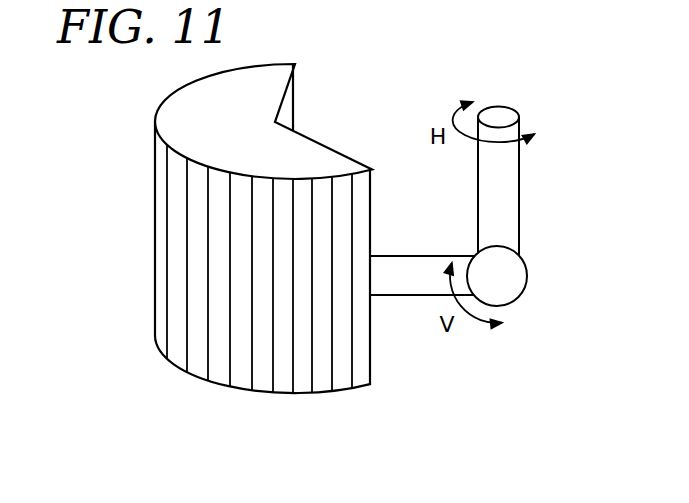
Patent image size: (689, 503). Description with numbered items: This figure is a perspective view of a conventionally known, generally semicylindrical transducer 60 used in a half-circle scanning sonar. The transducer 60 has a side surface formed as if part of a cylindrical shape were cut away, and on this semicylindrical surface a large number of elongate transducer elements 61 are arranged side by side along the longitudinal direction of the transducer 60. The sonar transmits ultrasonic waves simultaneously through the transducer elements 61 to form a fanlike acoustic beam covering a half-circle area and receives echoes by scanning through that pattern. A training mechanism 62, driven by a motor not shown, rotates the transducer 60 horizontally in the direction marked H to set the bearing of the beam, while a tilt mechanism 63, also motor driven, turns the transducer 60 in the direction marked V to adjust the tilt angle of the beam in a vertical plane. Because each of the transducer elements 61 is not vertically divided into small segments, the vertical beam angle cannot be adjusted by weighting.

The transducer 60 is at (218, 228).
The transducer elements 61 is at (180, 263).
The training mechanism 62 is at (522, 205).
The tilt mechanism 63 is at (410, 255).